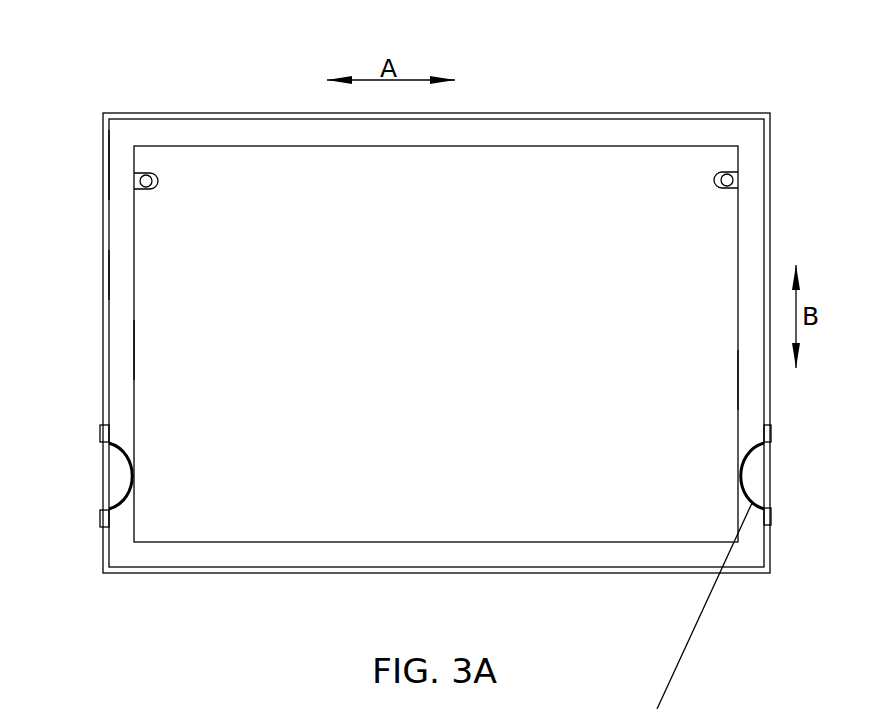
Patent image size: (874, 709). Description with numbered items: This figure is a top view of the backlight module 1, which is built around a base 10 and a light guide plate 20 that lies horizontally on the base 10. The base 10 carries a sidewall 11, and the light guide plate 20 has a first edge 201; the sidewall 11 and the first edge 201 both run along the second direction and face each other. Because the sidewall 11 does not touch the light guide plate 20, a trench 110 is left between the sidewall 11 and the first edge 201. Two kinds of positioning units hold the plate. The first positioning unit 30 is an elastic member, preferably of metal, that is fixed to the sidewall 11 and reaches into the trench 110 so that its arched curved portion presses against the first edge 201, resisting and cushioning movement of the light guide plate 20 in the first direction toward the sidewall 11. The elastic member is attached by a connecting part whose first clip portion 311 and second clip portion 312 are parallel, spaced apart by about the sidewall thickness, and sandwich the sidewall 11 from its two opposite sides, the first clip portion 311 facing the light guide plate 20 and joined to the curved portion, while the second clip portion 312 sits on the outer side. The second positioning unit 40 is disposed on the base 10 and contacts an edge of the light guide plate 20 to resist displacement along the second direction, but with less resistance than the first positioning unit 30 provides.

The backlight module 1 is at (139, 53).
The base 10 is at (109, 106).
The sidewall 11 is at (106, 158).
The trench 110 is at (119, 278).
The light guide plate 20 is at (155, 307).
The first edge 201 is at (134, 347).
The first positioning unit 30 is at (90, 518).
The first clip portion 311 is at (763, 524).
The second clip portion 312 is at (772, 520).
The second positioning unit 40 is at (733, 180).